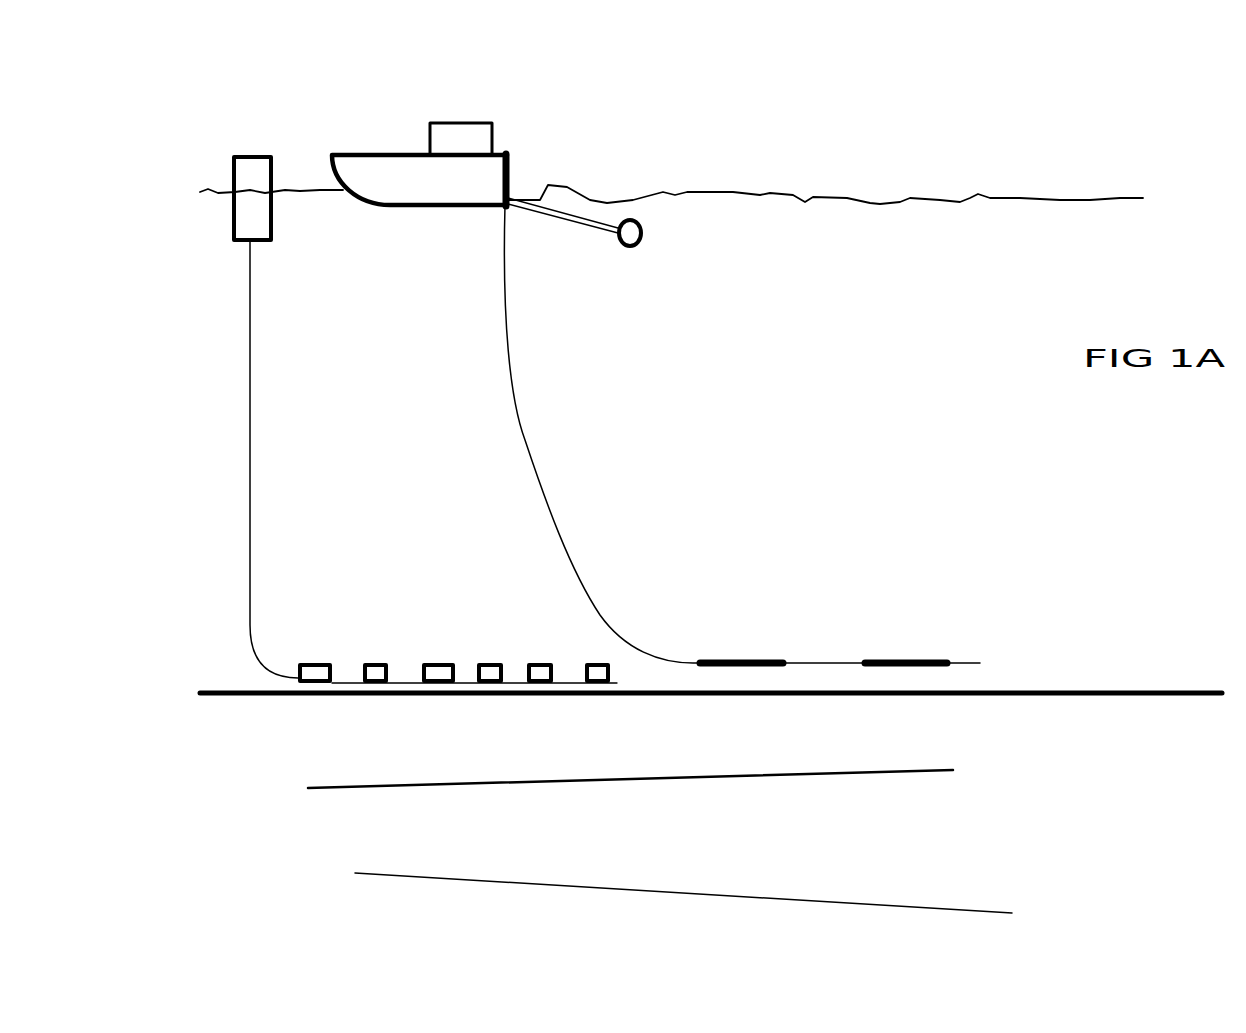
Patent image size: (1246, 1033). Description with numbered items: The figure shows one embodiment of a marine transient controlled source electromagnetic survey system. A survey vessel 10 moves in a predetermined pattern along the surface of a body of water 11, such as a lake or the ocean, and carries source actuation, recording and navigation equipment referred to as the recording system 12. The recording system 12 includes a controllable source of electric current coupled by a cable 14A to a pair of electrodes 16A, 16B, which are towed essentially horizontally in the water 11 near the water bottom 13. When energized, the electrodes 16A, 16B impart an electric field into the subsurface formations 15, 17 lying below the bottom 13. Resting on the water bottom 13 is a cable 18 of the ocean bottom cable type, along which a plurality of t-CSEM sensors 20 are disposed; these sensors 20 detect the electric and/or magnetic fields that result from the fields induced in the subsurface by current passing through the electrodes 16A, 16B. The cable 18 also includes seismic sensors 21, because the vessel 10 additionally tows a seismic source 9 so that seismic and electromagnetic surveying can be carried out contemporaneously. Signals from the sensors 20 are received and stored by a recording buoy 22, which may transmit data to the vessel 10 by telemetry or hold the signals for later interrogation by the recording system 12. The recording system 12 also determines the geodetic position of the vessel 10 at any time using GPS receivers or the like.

The seismic source 9 is at (632, 247).
The survey vessel 10 is at (372, 165).
The body of water 11 is at (773, 195).
The recording system 12 is at (505, 155).
The water bottom 13 is at (973, 690).
The cable 14A is at (520, 423).
The subsurface formation 15 is at (635, 780).
The electrode 16A is at (727, 660).
The electrode 16B is at (892, 660).
The subsurface formation 17 is at (800, 903).
The cable 18 is at (250, 443).
The t-CSEM sensors 20 is at (330, 663).
The seismic sensors 21 is at (587, 663).
The recording buoy 22 is at (248, 155).